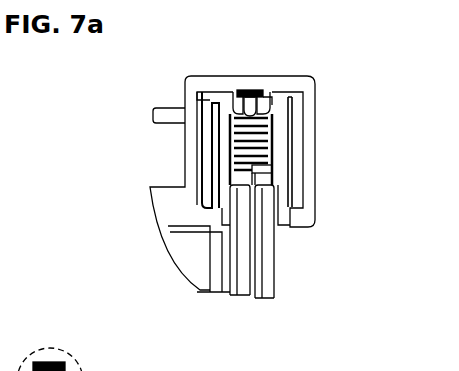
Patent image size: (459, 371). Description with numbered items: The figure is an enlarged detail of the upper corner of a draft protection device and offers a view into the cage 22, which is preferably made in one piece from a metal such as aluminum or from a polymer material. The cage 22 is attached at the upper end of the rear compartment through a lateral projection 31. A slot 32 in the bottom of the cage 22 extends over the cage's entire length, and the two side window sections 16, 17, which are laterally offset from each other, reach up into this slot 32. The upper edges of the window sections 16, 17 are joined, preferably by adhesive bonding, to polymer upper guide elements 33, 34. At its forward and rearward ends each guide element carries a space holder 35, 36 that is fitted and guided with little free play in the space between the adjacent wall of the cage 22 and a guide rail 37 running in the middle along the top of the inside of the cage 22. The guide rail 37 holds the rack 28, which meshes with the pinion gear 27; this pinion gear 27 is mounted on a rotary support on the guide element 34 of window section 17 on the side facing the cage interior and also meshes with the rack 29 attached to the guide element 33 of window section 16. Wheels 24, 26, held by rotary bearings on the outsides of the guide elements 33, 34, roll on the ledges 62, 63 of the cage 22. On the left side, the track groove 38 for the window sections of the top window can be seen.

The cage 22 is at (328, 70).
The lateral projection 31 is at (183, 212).
The track groove 38 is at (182, 155).
The space holder 36 is at (207, 100).
The upper guide element 34 is at (220, 125).
The wheel 26 is at (210, 147).
The ledge 63 is at (209, 209).
The rack 28 is at (246, 92).
The pinion gear 27 is at (253, 100).
The guide rail 37 is at (268, 95).
The upper guide element 33 is at (281, 157).
The rack 29 is at (263, 172).
The space holder 35 is at (295, 100).
The wheel 24 is at (295, 142).
The ledge 62 is at (295, 210).
The slot 32 is at (290, 233).
The side window section 17 is at (238, 273).
The side window section 16 is at (260, 273).